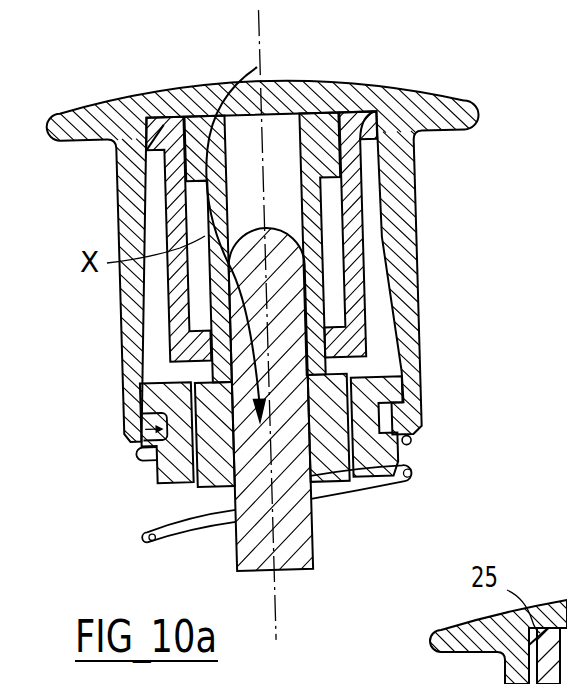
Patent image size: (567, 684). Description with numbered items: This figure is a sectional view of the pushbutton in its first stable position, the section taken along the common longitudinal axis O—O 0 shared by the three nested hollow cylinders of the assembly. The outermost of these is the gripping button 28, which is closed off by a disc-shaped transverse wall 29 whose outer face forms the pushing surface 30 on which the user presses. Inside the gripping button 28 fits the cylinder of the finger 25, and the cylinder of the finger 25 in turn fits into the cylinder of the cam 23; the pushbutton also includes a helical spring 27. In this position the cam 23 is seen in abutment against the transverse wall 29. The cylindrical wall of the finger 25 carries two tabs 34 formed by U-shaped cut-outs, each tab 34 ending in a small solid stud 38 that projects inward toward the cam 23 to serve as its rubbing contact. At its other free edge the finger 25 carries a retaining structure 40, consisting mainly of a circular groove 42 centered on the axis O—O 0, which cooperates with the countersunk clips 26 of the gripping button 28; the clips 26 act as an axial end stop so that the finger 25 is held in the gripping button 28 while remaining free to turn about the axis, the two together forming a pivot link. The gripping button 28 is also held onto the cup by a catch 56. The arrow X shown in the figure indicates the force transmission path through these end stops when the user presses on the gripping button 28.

The axis O—O 0 is at (259, 50).
The cam 23 is at (330, 164).
The finger 25 is at (166, 128).
The countersunk clip 26 is at (397, 420).
The spring 27 is at (410, 477).
The gripping button 28 is at (395, 243).
The transverse wall 29 is at (440, 112).
The pushing surface 30 is at (394, 84).
The tab 34 is at (353, 222).
The stud 38 is at (358, 340).
The retaining structure 40 is at (384, 392).
The circular groove 42 is at (128, 436).
The catch 56 is at (300, 528).